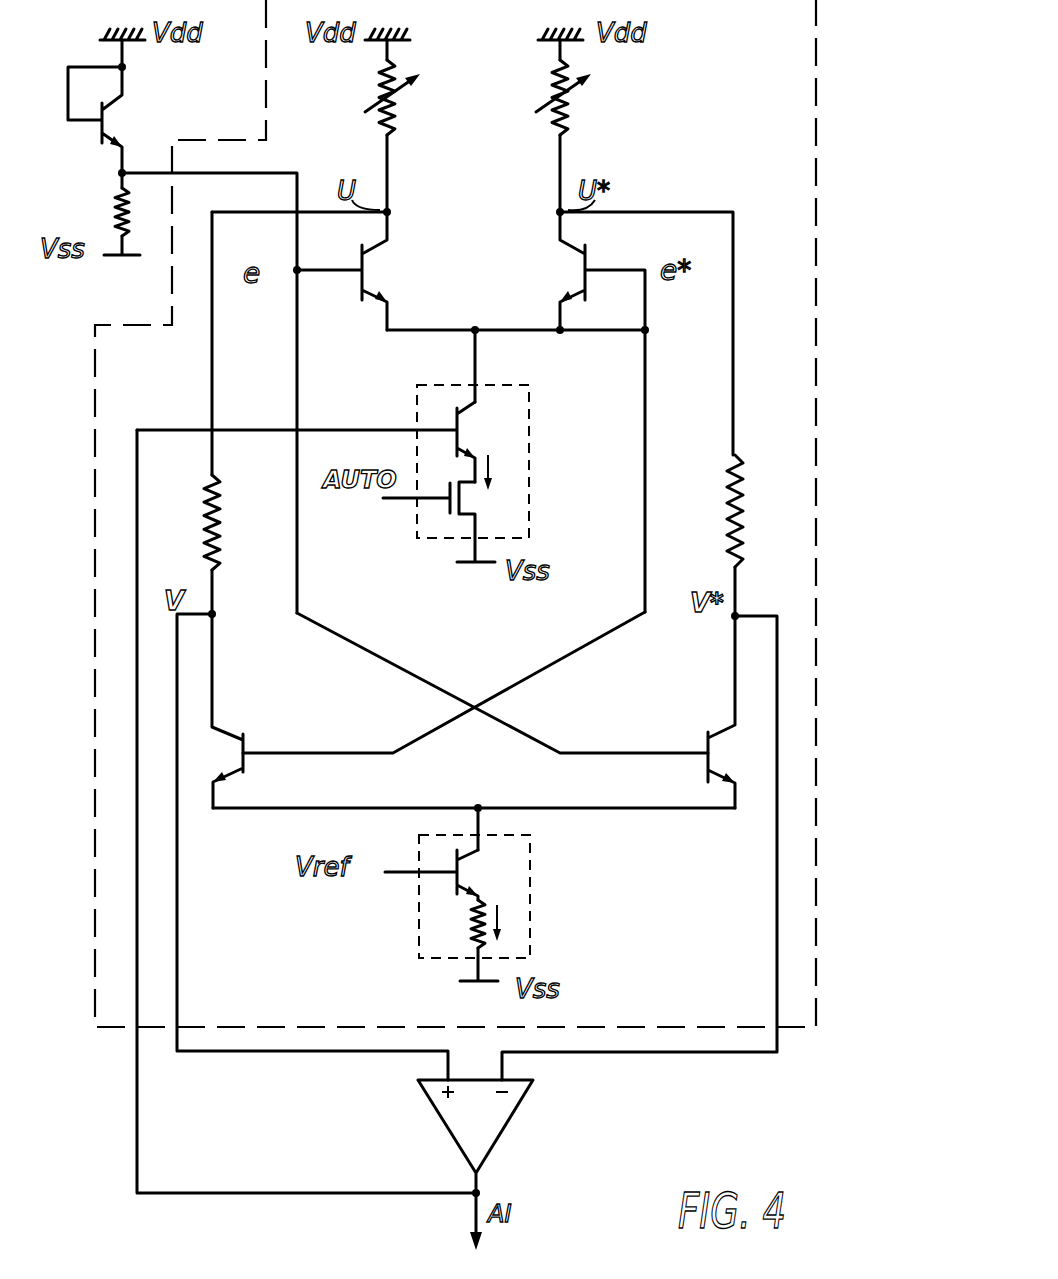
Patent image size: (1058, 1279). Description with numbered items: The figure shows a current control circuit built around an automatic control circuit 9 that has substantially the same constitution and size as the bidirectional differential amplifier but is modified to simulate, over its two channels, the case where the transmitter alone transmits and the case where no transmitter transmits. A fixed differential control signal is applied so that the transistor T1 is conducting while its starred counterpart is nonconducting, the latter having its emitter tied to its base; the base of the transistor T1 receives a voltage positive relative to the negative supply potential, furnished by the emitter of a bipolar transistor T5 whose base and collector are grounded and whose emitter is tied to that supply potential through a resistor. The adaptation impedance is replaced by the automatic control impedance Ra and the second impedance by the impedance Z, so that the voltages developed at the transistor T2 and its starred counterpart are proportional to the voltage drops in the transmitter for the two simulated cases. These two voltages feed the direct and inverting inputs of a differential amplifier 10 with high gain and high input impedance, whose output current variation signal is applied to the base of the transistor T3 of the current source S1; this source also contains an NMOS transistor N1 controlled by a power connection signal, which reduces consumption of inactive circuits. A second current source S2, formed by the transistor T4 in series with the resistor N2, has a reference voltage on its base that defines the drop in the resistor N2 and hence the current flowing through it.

The automatic control circuit 9 is at (818, 512).
The bipolar transistor T5 is at (128, 118).
The automatic control impedance Ra is at (376, 82).
The transistor T1 is at (392, 280).
The transistor T3 is at (485, 428).
The current source S1 is at (531, 483).
The NMOS transistor N1 is at (484, 508).
The impedance Z is at (222, 550).
The transistor T2 is at (278, 722).
The transistor T4 is at (486, 870).
The current source S2 is at (532, 909).
The resistor N2 is at (470, 932).
The differential amplifier 10 is at (500, 1134).